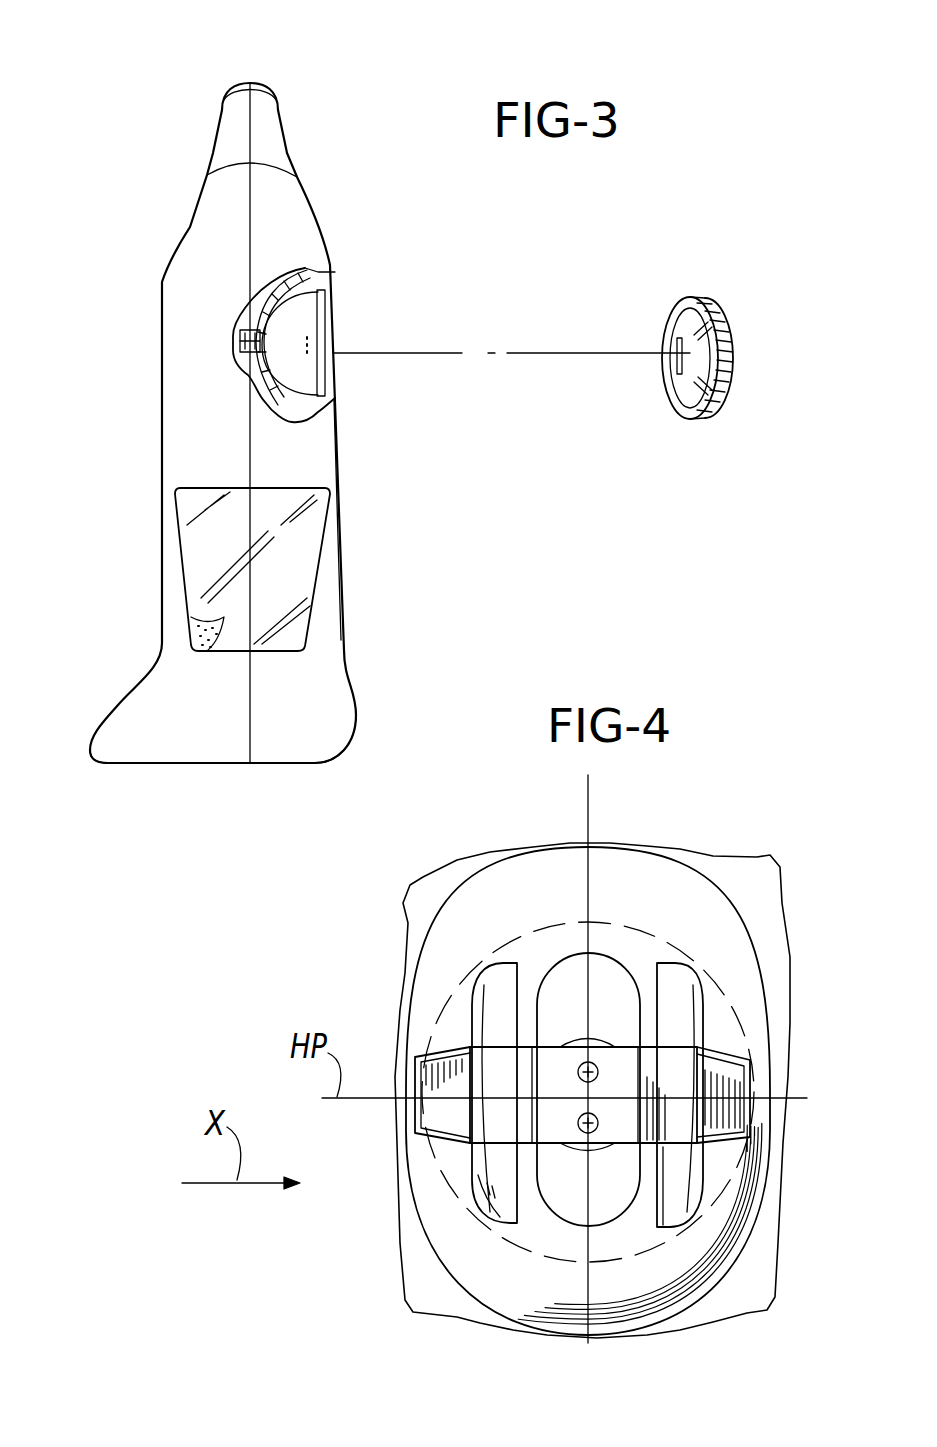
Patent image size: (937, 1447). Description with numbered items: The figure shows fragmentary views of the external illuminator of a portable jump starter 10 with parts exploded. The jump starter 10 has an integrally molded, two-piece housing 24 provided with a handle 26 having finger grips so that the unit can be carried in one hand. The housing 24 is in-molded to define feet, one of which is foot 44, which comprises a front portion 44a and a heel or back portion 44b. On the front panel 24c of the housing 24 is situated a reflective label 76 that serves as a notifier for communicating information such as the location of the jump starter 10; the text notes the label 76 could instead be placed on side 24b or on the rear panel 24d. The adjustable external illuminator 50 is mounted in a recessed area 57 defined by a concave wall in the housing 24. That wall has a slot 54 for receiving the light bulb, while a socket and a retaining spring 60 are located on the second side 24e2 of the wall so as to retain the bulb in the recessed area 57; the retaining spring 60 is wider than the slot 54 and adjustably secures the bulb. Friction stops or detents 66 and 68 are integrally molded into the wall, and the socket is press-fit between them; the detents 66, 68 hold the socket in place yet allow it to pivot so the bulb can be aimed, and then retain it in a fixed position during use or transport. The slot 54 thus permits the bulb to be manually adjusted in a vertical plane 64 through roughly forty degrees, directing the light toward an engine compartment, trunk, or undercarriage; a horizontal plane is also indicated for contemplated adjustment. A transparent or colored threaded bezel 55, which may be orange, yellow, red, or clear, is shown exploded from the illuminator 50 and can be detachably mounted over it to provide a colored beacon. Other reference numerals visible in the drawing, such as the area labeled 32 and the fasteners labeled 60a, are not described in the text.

In FIG. 3, the portable jump starter 10 is at (310, 165).
In FIG. 3, the housing 24 is at (162, 290).
In FIG. 3, the side 24b is at (192, 434).
In FIG. 3, the front panel 24c is at (162, 364).
In FIG. 3, the rear panel 24d is at (343, 434).
In FIG. 4, the second side of wall 24e2 is at (637, 867).
In FIG. 3, the handle 26 is at (238, 82).
In FIG. 3, the switch recess 32 is at (191, 638).
In FIG. 3, the foot 44 is at (230, 757).
In FIG. 3, the front portion 44a is at (105, 748).
In FIG. 3, the heel or back portion 44b is at (330, 748).
In FIG. 3, the external illuminator 50 is at (302, 325).
In FIG. 4, the external illuminator 50 is at (433, 993).
In FIG. 4, the slot 54 is at (572, 950).
In FIG. 3, the bezel 55 is at (707, 297).
In FIG. 3, the recessed area 57 is at (325, 280).
In FIG. 4, the retaining spring 60 is at (553, 1062).
In FIG. 4, the screws 60a is at (578, 1114).
In FIG. 4, the vertical plane 64 is at (588, 797).
In FIG. 4, the friction stop or detent 66 is at (677, 973).
In FIG. 4, the friction stop or detent 68 is at (497, 983).
In FIG. 3, the reflective label 76 is at (304, 561).